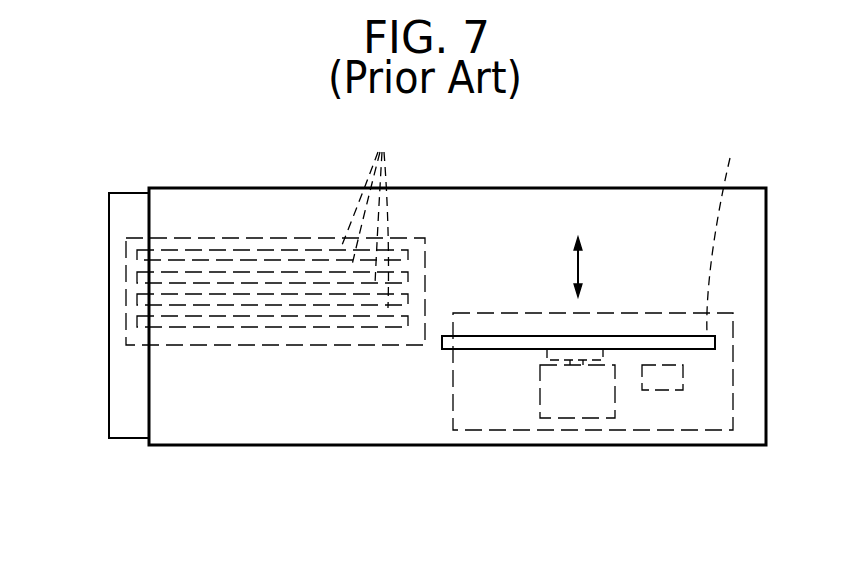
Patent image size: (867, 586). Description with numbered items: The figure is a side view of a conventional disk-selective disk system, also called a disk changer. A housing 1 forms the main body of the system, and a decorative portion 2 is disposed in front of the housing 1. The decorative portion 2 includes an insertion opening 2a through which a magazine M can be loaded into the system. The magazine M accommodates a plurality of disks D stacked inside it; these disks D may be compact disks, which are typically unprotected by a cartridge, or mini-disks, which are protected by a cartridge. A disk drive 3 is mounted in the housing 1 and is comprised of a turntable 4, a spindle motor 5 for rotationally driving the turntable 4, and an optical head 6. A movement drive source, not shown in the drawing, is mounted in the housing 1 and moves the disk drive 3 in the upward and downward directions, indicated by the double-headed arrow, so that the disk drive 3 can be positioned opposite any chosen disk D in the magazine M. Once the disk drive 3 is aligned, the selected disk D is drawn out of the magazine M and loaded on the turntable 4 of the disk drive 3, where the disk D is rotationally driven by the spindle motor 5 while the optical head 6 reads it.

The housing 1 is at (563, 187).
The decorative portion 2 is at (128, 205).
The insertion opening 2a is at (117, 308).
The disk drive 3 is at (738, 358).
The turntable 4 is at (547, 352).
The spindle motor 5 is at (568, 412).
The optical head 6 is at (667, 388).
The magazine M is at (254, 236).
The disk D is at (542, 224).